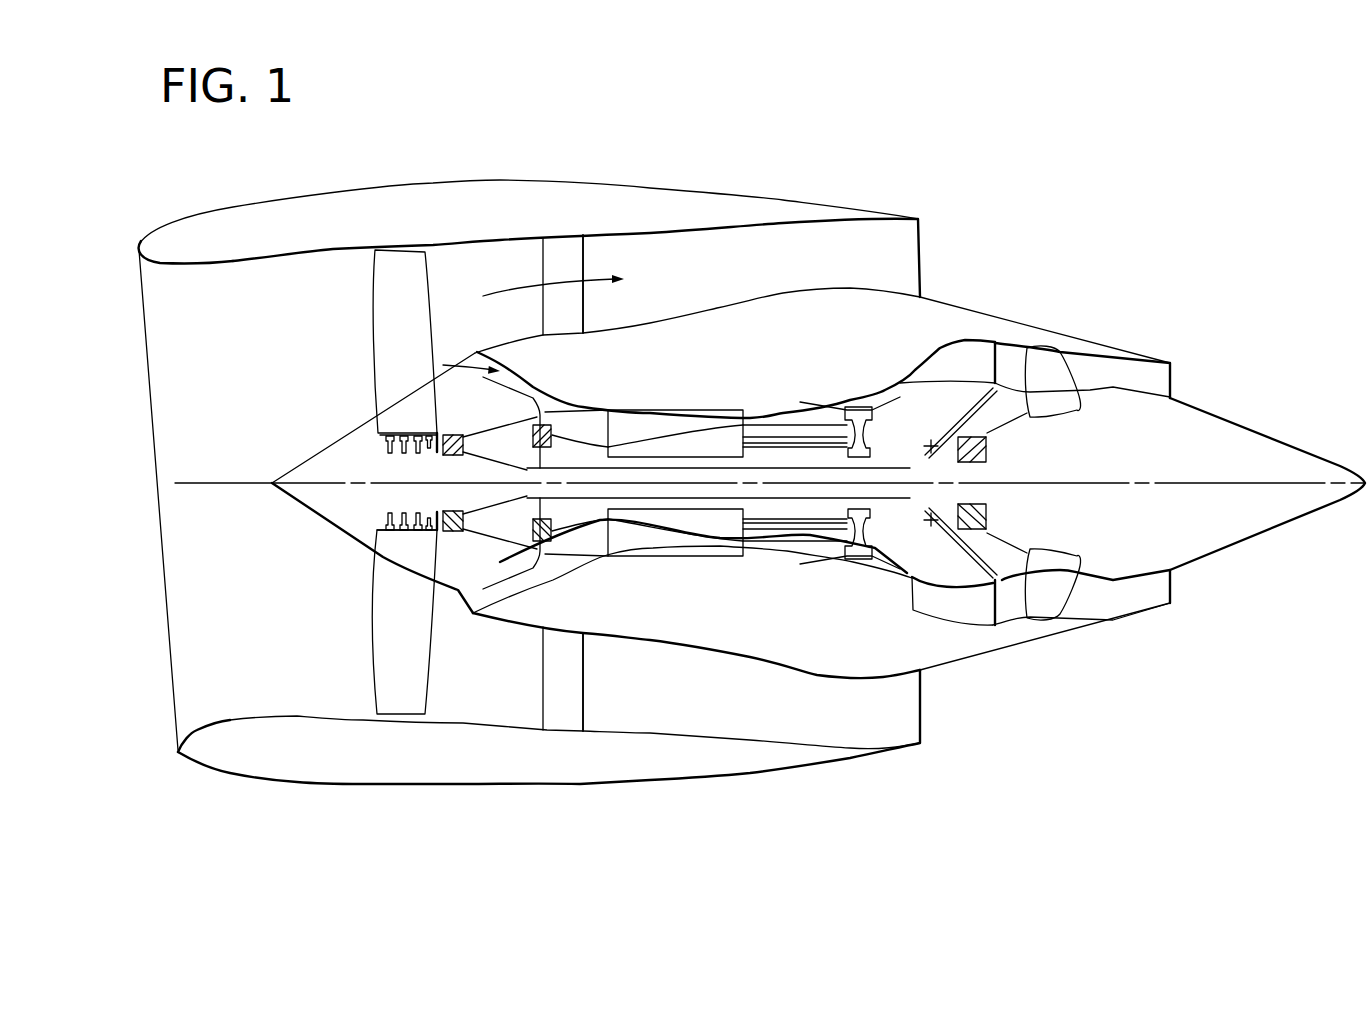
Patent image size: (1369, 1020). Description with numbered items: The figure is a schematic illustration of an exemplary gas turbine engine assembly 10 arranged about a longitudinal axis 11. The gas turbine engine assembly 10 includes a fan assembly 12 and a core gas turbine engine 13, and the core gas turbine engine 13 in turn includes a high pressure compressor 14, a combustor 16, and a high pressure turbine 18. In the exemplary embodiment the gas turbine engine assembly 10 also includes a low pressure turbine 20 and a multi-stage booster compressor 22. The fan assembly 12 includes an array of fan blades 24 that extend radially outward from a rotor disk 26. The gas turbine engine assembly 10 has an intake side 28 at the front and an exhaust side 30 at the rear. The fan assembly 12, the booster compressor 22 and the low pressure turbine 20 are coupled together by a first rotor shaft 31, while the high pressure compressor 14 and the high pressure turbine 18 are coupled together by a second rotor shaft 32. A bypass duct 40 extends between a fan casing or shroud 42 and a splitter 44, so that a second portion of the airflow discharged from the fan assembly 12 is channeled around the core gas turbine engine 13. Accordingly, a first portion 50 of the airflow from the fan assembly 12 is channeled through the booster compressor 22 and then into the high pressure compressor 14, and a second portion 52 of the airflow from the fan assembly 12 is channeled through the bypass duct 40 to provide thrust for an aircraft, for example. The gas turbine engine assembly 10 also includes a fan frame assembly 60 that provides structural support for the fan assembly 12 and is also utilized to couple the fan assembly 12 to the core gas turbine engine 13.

The gas turbine engine assembly 10 is at (782, 150).
The longitudinal axis 11 is at (190, 480).
The fan assembly 12 is at (403, 619).
The core gas turbine engine 13 is at (783, 290).
The high pressure compressor 14 is at (630, 425).
The combustor 16 is at (813, 420).
The high pressure turbine 18 is at (855, 563).
The low pressure turbine 20 is at (955, 360).
The multi-stage booster compressor 22 is at (530, 368).
The fan blades 24 is at (387, 308).
The rotor disk 26 is at (403, 550).
The intake side 28 is at (122, 268).
The exhaust side 30 is at (945, 250).
The first rotor shaft 31 is at (633, 497).
The second rotor shaft 32 is at (677, 537).
The bypass duct 40 is at (752, 260).
The fan casing or shroud 42 is at (323, 184).
The splitter 44 is at (647, 323).
The first portion of the airflow 50 is at (460, 377).
The second portion of the airflow 52 is at (527, 288).
The fan frame assembly 60 is at (584, 258).